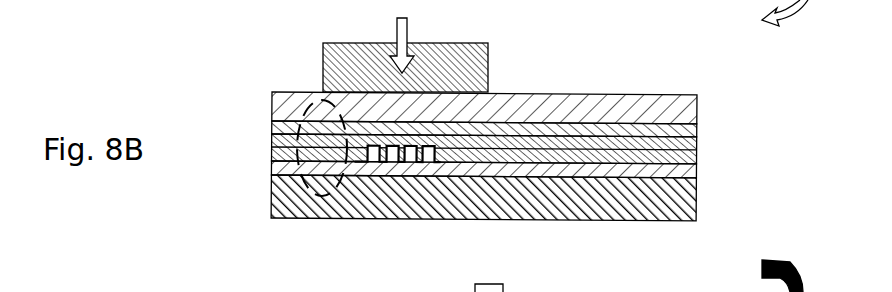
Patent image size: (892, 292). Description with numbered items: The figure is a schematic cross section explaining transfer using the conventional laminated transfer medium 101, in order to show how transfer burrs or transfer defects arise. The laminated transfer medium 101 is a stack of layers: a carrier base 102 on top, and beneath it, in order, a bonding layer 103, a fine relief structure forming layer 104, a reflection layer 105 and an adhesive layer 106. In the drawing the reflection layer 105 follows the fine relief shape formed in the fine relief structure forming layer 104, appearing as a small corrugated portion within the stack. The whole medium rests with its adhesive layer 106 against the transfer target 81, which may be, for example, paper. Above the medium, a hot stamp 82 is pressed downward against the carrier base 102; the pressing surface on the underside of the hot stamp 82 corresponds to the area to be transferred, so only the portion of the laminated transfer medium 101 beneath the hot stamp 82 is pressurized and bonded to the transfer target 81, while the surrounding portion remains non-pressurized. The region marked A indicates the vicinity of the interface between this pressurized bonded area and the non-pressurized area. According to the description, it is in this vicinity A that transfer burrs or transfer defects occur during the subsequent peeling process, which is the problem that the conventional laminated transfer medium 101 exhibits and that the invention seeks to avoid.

The hot stamp 82 is at (478, 62).
The laminated transfer medium 101 is at (495, 190).
The carrier base 102 is at (687, 98).
The bonding layer 103 is at (680, 128).
The fine relief structure forming layer 104 is at (682, 142).
The reflection layer 105 is at (388, 162).
The adhesive layer 106 is at (683, 168).
The transfer target 81 is at (680, 205).
The interface between pressurized bonded area and non-pressurized area A is at (312, 95).